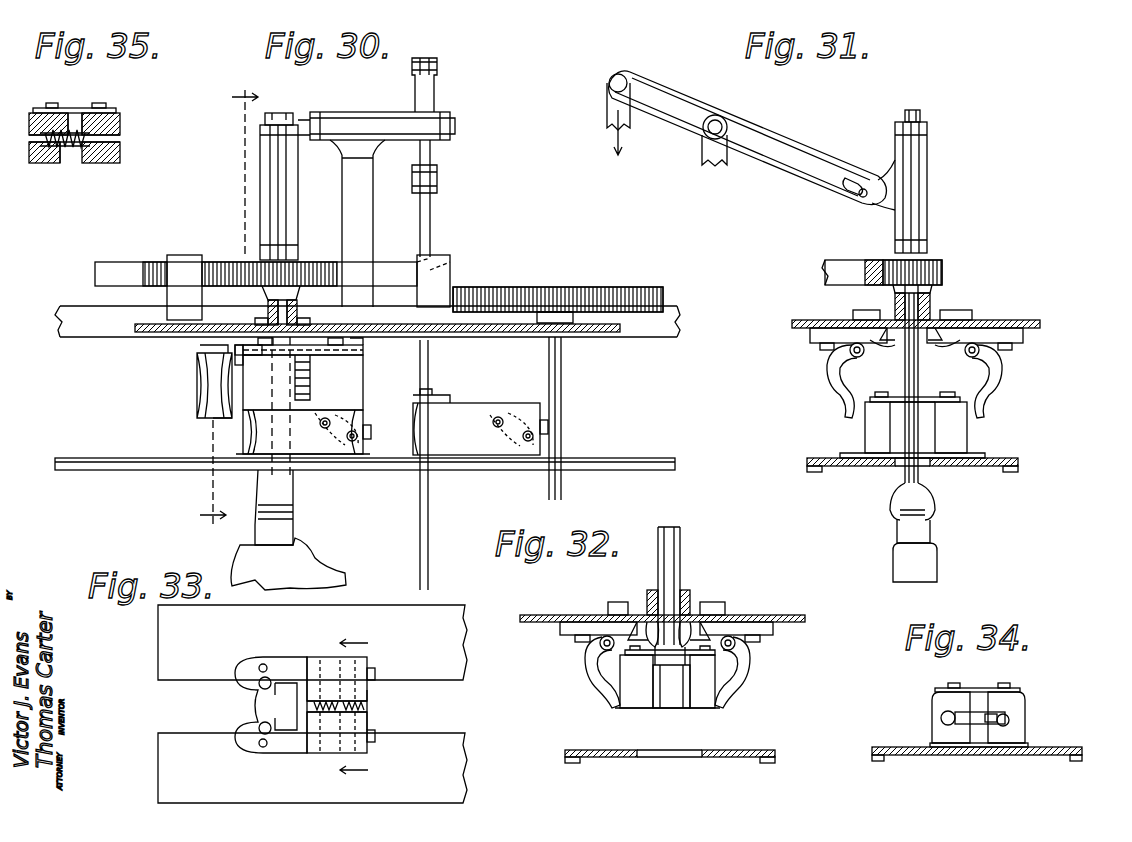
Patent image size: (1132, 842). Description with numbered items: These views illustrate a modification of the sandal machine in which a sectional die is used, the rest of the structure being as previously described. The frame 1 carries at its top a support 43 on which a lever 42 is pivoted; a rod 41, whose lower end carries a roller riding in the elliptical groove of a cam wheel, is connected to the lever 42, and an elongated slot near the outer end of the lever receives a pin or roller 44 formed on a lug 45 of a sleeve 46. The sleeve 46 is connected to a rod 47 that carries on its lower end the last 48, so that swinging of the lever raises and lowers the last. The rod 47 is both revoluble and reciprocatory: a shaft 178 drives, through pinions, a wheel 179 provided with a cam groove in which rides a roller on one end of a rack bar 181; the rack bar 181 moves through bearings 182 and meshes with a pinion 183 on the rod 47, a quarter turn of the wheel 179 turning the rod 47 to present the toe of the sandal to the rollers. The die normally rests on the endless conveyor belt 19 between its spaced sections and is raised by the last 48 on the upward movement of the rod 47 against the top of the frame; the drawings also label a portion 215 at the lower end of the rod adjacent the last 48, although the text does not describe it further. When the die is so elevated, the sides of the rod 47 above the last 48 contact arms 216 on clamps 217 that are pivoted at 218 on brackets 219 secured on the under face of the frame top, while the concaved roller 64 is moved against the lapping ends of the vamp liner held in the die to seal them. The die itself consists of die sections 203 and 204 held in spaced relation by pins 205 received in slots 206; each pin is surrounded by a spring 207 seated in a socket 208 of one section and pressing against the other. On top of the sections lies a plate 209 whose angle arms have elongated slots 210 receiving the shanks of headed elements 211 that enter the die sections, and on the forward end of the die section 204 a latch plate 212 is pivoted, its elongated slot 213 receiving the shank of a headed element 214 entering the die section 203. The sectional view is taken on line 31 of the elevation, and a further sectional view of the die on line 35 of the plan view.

In FIG. 30, the frame 1 is at (622, 333).
In FIG. 31, the frame 1 is at (1042, 326).
In FIG. 32, the frame 1 is at (806, 618).
In FIG. 30, the endless belt 19 is at (640, 460).
In FIG. 31, the endless belt 19 is at (1018, 460).
In FIG. 32, the endless belt 19 is at (728, 759).
In FIG. 33, the endless belt 19 is at (172, 745).
In FIG. 34, the endless belt 19 is at (898, 752).
In FIG. 30, the section line 31 is at (227, 306).
In FIG. 33, the section line 35 is at (354, 708).
In FIG. 30, the rod 41 is at (432, 213).
In FIG. 30, the lever 42 is at (437, 92).
In FIG. 31, the lever 42 is at (680, 102).
In FIG. 30, the support 43 is at (352, 208).
In FIG. 31, the support 43 is at (713, 165).
In FIG. 31, the pin or roller 44 is at (850, 193).
In FIG. 31, the lug 45 is at (890, 170).
In FIG. 30, the sleeve 46 is at (262, 195).
In FIG. 31, the sleeve 46 is at (928, 185).
In FIG. 30, the rod 47 is at (292, 488).
In FIG. 31, the rod 47 is at (913, 110).
In FIG. 32, the rod 47 is at (681, 545).
In FIG. 30, the last 48 is at (312, 560).
In FIG. 31, the last 48 is at (940, 560).
In FIG. 32, the last 48 is at (672, 668).
In FIG. 30, the concaved roller 64 is at (200, 392).
In FIG. 30, the shaft 178 is at (566, 395).
In FIG. 30, the wheel 179 is at (562, 300).
In FIG. 30, the rack bar 181 is at (95, 273).
In FIG. 30, the bearings 182 is at (438, 262).
In FIG. 30, the pinion 183 is at (290, 268).
In FIG. 35, the die section 203 is at (120, 152).
In FIG. 31, the die section 203 is at (865, 433).
In FIG. 32, the die section 203 is at (636, 712).
In FIG. 33, the die section 203 is at (340, 668).
In FIG. 34, the die section 203 is at (1022, 692).
In FIG. 35, the die section 204 is at (45, 163).
In FIG. 30, the die section 204 is at (352, 426).
In FIG. 31, the die section 204 is at (967, 433).
In FIG. 32, the die section 204 is at (700, 712).
In FIG. 33, the die section 204 is at (307, 745).
In FIG. 34, the die section 204 is at (932, 710).
In FIG. 35, the pins 205 is at (86, 148).
In FIG. 30, the pins 205 is at (325, 418).
In FIG. 35, the slots 206 is at (120, 136).
In FIG. 35, the springs 207 is at (70, 148).
In FIG. 33, the springs 207 is at (347, 706).
In FIG. 35, the sockets 208 is at (58, 150).
In FIG. 35, the plate 209 is at (76, 110).
In FIG. 30, the plate 209 is at (498, 418).
In FIG. 31, the plate 209 is at (925, 398).
In FIG. 33, the plate 209 is at (290, 672).
In FIG. 34, the plate 209 is at (1005, 683).
In FIG. 33, the elongated slots 210 is at (260, 665).
In FIG. 35, the headed elements 211 is at (50, 103).
In FIG. 33, the headed elements 211 is at (263, 690).
In FIG. 34, the headed elements 211 is at (955, 683).
In FIG. 30, the plate 212 is at (550, 428).
In FIG. 33, the plate 212 is at (380, 720).
In FIG. 34, the plate 212 is at (960, 725).
In FIG. 34, the elongated slot 213 is at (992, 724).
In FIG. 33, the headed element 214 is at (378, 680).
In FIG. 34, the headed element 214 is at (1010, 720).
In FIG. 30, the shaft end 215 is at (295, 512).
In FIG. 31, the shaft end 215 is at (940, 500).
In FIG. 32, the shaft end 215 is at (690, 618).
In FIG. 31, the arms 216 is at (920, 320).
In FIG. 32, the arms 216 is at (628, 632).
In FIG. 30, the clamps 217 is at (348, 397).
In FIG. 31, the clamps 217 is at (840, 380).
In FIG. 32, the clamps 217 is at (605, 672).
In FIG. 30, the pivot 218 is at (363, 350).
In FIG. 31, the pivot 218 is at (980, 353).
In FIG. 32, the pivot 218 is at (600, 646).
In FIG. 30, the brackets 219 is at (240, 340).
In FIG. 31, the brackets 219 is at (1000, 335).
In FIG. 32, the brackets 219 is at (567, 633).